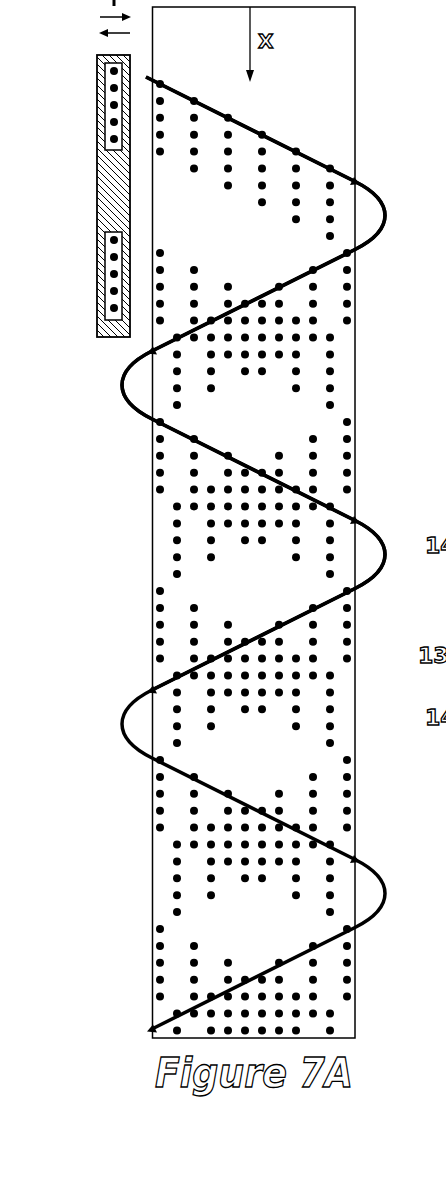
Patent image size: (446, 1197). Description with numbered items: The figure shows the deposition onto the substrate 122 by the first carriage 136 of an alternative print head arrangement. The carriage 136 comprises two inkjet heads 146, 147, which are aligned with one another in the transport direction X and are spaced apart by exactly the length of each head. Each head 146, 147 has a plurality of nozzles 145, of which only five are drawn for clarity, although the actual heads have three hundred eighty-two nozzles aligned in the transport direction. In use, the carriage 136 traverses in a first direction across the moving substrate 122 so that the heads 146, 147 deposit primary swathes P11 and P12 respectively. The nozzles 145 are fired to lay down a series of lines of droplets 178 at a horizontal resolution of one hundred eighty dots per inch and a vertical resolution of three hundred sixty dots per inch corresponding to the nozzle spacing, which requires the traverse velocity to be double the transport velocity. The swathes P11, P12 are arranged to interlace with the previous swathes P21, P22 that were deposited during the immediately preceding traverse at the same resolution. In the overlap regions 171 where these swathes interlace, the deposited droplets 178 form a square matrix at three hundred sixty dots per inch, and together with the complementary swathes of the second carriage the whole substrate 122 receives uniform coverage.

The first carriage 136 is at (97, 192).
The nozzles 145 is at (110, 86).
The inkjet head 146 is at (97, 125).
The inkjet head 147 is at (98, 280).
The substrate 122 is at (357, 378).
The overlap regions 171 is at (267, 330).
The droplets 178 is at (333, 168).
The primary swathe P11 is at (298, 152).
The primary swathe P12 is at (243, 282).
The previous swathe P21 is at (177, 372).
The previous swathe P22 is at (175, 542).